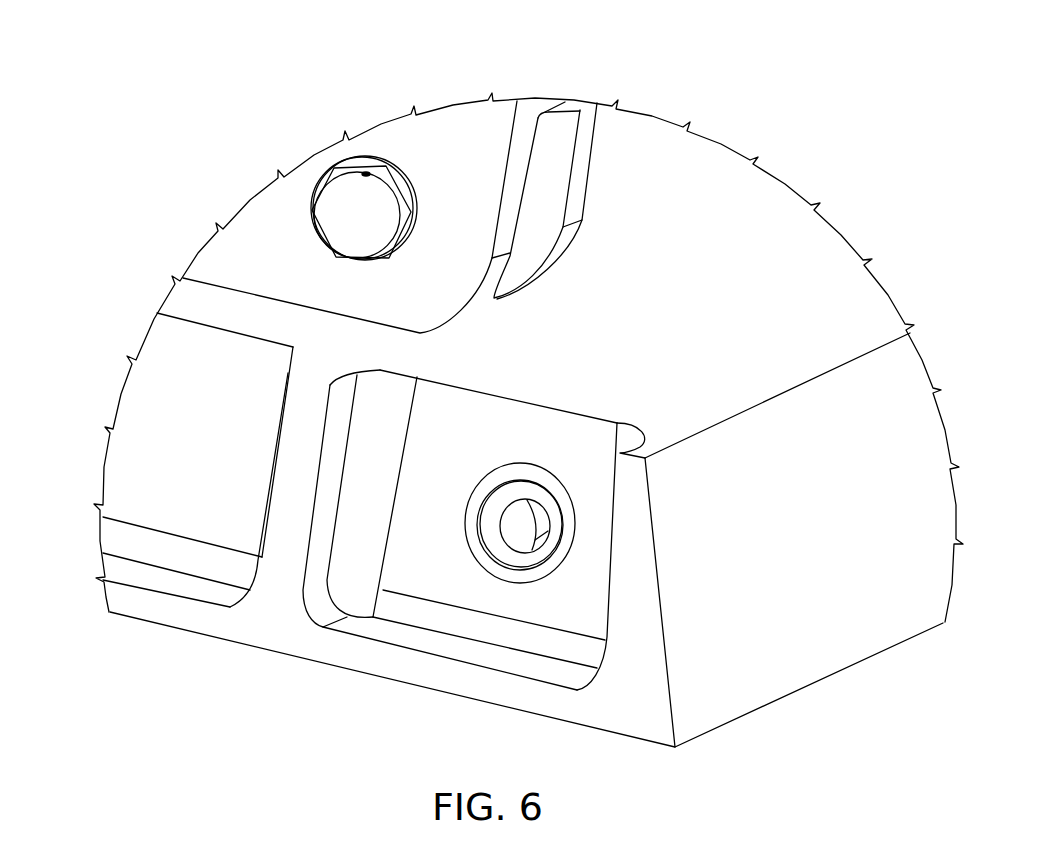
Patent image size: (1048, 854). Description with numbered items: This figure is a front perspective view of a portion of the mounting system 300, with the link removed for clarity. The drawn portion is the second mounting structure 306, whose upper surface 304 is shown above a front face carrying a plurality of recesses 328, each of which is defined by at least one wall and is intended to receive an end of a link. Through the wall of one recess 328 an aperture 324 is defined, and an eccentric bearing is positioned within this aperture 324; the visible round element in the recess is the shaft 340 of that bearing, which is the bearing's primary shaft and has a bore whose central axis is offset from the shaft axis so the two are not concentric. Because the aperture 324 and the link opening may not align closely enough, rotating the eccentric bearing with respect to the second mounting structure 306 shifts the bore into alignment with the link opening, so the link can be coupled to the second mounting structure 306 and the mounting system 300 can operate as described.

The mounting system 300 is at (160, 160).
The top face 304 is at (457, 130).
The second mounting structure 306 is at (910, 438).
The aperture 324 is at (492, 500).
The recess 328 is at (358, 530).
The shaft 340 is at (490, 527).